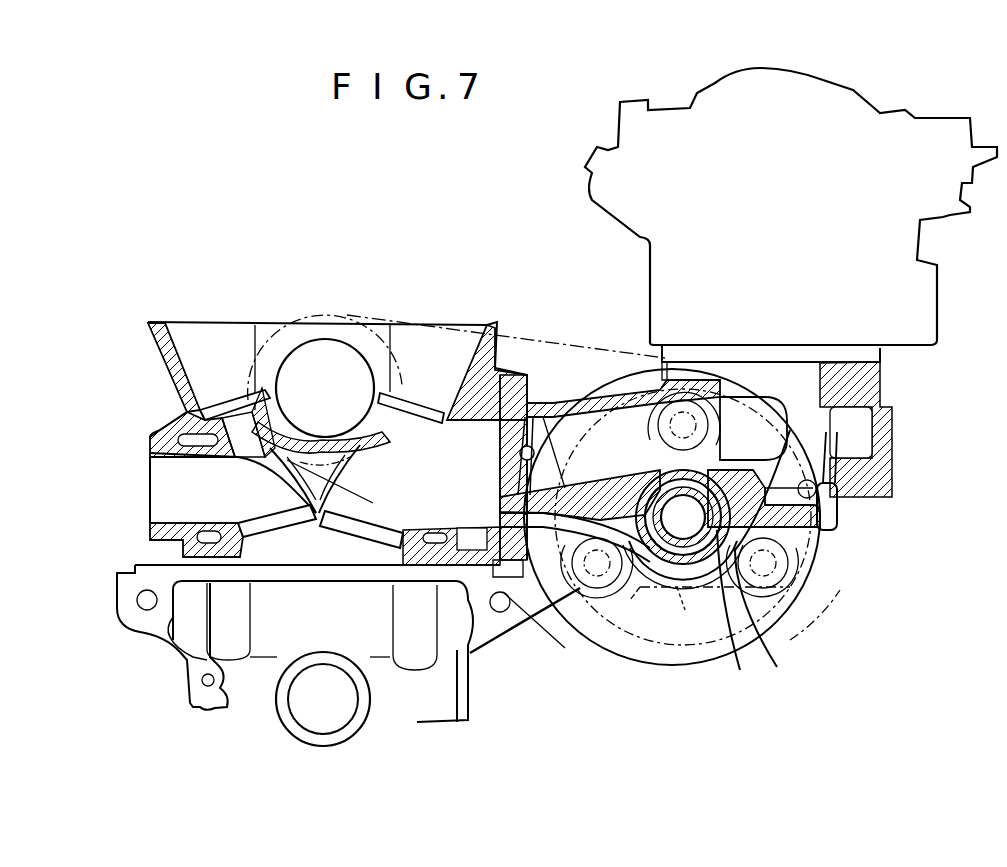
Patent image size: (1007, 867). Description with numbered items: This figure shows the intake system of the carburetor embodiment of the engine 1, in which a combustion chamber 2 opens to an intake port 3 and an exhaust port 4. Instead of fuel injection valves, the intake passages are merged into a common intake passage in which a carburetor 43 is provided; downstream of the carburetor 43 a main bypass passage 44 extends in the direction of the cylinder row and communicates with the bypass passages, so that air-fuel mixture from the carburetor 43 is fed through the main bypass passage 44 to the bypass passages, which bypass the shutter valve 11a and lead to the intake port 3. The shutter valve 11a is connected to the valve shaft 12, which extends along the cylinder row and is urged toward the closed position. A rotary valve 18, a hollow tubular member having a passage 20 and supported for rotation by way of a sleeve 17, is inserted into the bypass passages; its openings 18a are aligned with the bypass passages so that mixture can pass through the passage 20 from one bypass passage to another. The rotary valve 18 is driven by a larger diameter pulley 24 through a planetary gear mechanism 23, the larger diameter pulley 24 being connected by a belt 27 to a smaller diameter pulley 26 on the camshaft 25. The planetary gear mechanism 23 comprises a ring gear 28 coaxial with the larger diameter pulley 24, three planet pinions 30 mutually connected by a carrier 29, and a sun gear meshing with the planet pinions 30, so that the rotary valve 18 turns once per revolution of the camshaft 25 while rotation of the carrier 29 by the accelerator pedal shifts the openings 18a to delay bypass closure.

The engine 1 is at (170, 303).
The combustion chamber 2 is at (323, 558).
The intake port 3 is at (387, 500).
The exhaust port 4 is at (150, 512).
The shutter valve 11a is at (515, 478).
The valve shaft 12 is at (518, 451).
The sleeve 17 is at (778, 650).
The rotary valve 18 is at (740, 670).
The opening 18a is at (708, 604).
The passage 20 is at (835, 525).
The planetary gear mechanism 23 is at (855, 655).
The larger diameter pulley 24 is at (805, 622).
The camshaft 25 is at (312, 340).
The smaller diameter pulley 26 is at (318, 318).
The belt 27 is at (532, 335).
The ring gear 28 is at (790, 628).
The carrier 29 is at (695, 608).
The planet pinion 30 is at (700, 380).
The carburetor 43 is at (828, 72).
The main bypass passage 44 is at (838, 505).